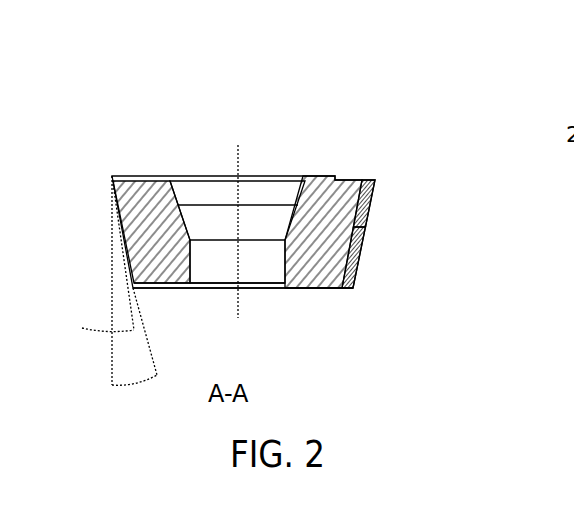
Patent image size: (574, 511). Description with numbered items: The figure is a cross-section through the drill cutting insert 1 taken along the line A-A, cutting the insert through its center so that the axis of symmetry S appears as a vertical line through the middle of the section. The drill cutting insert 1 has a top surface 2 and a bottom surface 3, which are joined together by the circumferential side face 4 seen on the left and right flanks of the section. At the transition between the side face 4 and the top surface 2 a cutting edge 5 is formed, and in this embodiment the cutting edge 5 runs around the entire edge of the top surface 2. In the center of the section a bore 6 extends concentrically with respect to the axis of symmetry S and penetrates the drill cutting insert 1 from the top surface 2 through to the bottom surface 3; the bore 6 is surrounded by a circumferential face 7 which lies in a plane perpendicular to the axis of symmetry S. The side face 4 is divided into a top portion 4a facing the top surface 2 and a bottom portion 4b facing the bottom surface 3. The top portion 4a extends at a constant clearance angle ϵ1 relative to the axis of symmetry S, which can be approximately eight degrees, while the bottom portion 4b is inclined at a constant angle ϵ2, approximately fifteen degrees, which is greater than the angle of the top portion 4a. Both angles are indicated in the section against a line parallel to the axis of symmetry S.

The drill cutting insert 1 is at (129, 84).
The top surface 2 is at (323, 175).
The bottom surface 3 is at (333, 288).
The circumferential side face 4 is at (405, 233).
The top portion 4a is at (372, 208).
The bottom portion 4b is at (360, 268).
The cutting edge 5 is at (105, 176).
The bore 6 is at (253, 265).
The circumferential face 7 is at (155, 180).
The axis of symmetry S is at (240, 158).